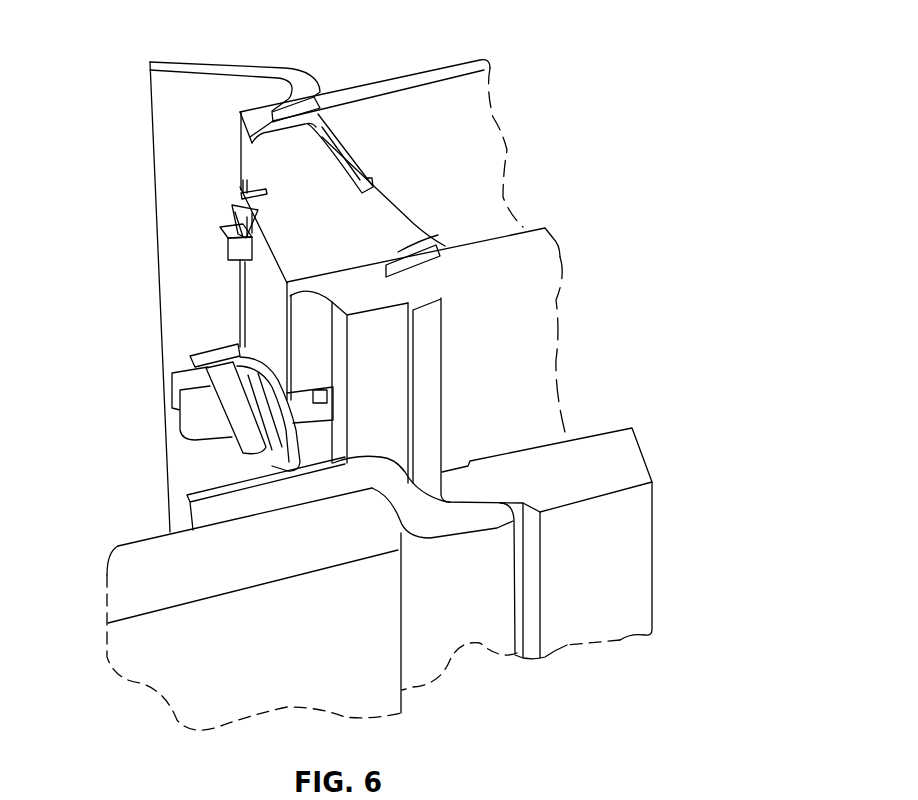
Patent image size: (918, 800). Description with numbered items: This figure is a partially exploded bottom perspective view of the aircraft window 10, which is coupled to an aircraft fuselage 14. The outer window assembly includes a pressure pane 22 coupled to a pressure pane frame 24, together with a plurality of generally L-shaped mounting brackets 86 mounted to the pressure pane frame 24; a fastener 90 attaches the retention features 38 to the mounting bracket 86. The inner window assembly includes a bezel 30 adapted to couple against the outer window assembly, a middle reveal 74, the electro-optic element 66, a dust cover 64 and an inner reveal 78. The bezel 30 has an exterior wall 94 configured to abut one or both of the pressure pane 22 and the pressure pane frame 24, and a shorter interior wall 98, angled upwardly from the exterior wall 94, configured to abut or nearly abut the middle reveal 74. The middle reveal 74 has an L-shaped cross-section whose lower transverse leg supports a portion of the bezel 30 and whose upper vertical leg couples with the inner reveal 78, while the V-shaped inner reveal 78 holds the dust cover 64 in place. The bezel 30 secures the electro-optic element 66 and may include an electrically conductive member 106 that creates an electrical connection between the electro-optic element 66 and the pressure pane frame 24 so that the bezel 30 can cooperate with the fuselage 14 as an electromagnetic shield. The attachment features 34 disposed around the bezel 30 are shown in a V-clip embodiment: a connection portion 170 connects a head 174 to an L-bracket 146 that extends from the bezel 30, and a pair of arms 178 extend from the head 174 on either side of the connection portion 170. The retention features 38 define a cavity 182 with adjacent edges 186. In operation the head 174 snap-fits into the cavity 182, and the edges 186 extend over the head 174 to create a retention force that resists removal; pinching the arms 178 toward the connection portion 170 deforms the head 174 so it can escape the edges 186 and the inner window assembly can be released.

The aircraft window 10 is at (678, 64).
The aircraft fuselage 14 is at (200, 697).
The pressure pane 22 is at (607, 607).
The pressure pane frame 24 is at (478, 642).
The bezel 30 is at (265, 172).
The attachment features 34 is at (210, 233).
The retention features 38 is at (350, 422).
The dust cover 64 is at (480, 138).
The electro-optic element 66 is at (530, 312).
The middle reveal 74 is at (344, 150).
The inner reveal 78 is at (230, 92).
The mounting brackets 86 is at (188, 494).
The fastener 90 is at (207, 350).
The exterior wall 94 is at (430, 357).
The interior wall 98 is at (408, 222).
The electrically conductive member 106 is at (424, 236).
The L-bracket 146 is at (247, 197).
The connection portion 170 is at (248, 198).
The head 174 is at (247, 260).
The arms 178 is at (258, 222).
The cavity 182 is at (303, 374).
The edges 186 is at (327, 402).